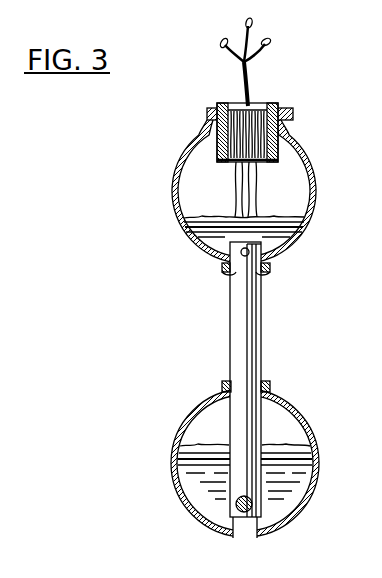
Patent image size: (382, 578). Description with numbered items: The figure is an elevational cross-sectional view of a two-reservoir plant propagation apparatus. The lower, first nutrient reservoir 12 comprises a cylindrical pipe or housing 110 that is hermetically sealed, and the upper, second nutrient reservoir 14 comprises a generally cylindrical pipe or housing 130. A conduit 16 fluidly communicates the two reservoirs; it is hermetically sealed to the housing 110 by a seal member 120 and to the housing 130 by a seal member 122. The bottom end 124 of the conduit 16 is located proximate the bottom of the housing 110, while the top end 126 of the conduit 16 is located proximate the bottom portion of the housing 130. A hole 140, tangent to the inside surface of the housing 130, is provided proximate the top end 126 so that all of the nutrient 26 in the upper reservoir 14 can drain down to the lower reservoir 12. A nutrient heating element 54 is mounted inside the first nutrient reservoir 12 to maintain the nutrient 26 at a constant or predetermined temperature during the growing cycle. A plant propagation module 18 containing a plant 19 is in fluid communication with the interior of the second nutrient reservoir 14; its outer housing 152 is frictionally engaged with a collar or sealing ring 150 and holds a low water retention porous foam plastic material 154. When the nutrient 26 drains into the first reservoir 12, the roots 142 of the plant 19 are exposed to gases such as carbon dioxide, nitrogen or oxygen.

The first nutrient reservoir 12 is at (265, 463).
The second nutrient reservoir 14 is at (267, 191).
The conduit 16 is at (262, 318).
The plant propagation module 18 is at (262, 61).
The plant 19 is at (269, 43).
The nutrient 26 is at (283, 236).
The nutrient heating element 54 is at (238, 520).
The pipe or housing 110 is at (291, 405).
The seal member 120 is at (225, 383).
The seal member 122 is at (228, 273).
The bottom end 124 is at (258, 530).
The top end 126 is at (222, 265).
The pipe or housing 130 is at (313, 212).
The hole 140 is at (263, 266).
The roots 142 is at (254, 184).
The collar or sealing ring 150 is at (208, 112).
The outer housing 152 is at (224, 130).
The porous foam plastic material 154 is at (229, 160).